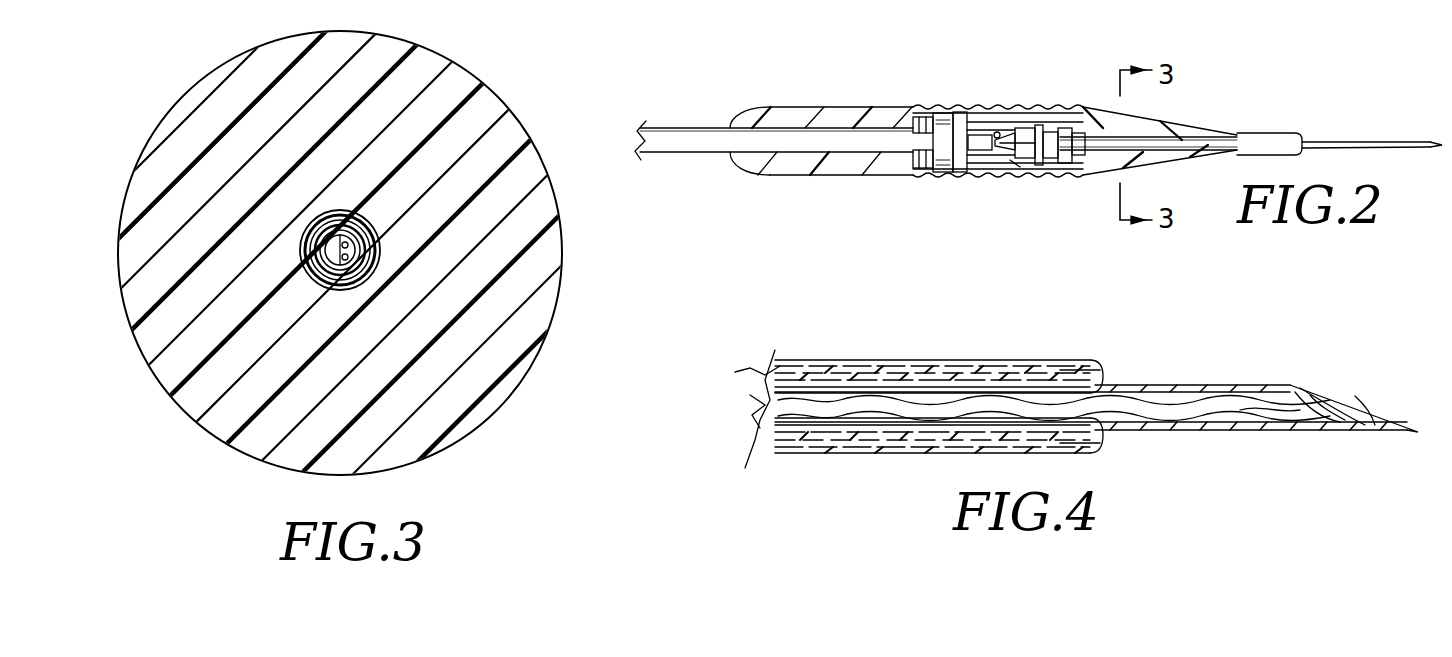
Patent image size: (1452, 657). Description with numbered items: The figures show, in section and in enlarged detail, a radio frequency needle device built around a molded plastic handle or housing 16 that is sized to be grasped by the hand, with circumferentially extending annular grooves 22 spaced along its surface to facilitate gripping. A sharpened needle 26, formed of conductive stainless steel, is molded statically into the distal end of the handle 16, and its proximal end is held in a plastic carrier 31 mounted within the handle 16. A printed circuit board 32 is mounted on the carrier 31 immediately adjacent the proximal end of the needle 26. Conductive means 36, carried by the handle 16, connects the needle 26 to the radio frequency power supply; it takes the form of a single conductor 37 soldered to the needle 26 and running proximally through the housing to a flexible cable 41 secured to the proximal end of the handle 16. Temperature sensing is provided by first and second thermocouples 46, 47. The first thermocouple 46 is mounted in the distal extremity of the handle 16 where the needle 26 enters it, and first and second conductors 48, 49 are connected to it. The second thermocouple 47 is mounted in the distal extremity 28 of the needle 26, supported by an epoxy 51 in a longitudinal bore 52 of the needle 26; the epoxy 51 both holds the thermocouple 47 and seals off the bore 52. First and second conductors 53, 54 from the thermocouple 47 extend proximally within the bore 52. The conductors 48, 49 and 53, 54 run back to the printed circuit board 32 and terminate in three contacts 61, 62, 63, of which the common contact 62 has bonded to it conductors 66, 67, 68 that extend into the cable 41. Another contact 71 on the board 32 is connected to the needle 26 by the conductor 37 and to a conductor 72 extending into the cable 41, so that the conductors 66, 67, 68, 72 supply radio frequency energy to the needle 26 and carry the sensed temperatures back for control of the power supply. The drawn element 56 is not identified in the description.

In FIG. 3, the handle or housing 16 is at (465, 82).
In FIG. 3, the second conductor 49 is at (334, 228).
In FIG. 3, the first conductor 48 is at (347, 222).
In FIG. 3, the second conductor 54 is at (371, 247).
In FIG. 4, the second conductor 54 is at (1232, 400).
In FIG. 3, the sharpened needle 26 is at (376, 256).
In FIG. 2, the sharpened needle 26 is at (1398, 147).
In FIG. 4, the sharpened needle 26 is at (1146, 380).
In FIG. 3, the first conductor 53 is at (370, 271).
In FIG. 4, the first conductor 53 is at (1253, 417).
In FIG. 2, the flexible cable 41 is at (688, 132).
In FIG. 2, the conductor 66 is at (913, 117).
In FIG. 2, the conductor 67 is at (916, 124).
In FIG. 2, the conductor 68 is at (908, 172).
In FIG. 2, the conductor 72 is at (923, 168).
In FIG. 2, the annular grooves 22 is at (923, 115).
In FIG. 2, the common contact 62 is at (996, 131).
In FIG. 2, the contact 63 is at (997, 154).
In FIG. 2, the printed circuit board 32 is at (1006, 133).
In FIG. 2, the conductive means 36 is at (1015, 120).
In FIG. 2, the contact 61 is at (1037, 130).
In FIG. 2, the carrier 31 is at (1053, 137).
In FIG. 2, the single conductor 37 is at (1018, 150).
In FIG. 2, the contact 71 is at (1018, 168).
In FIG. 4, the outer braided sheath 56 is at (857, 400).
In FIG. 4, the first thermocouple 46 is at (1073, 382).
In FIG. 4, the distal extremity 28 is at (1268, 388).
In FIG. 4, the second thermocouple 47 is at (1333, 407).
In FIG. 4, the epoxy 51 is at (1363, 427).
In FIG. 4, the bore 52 is at (1173, 418).